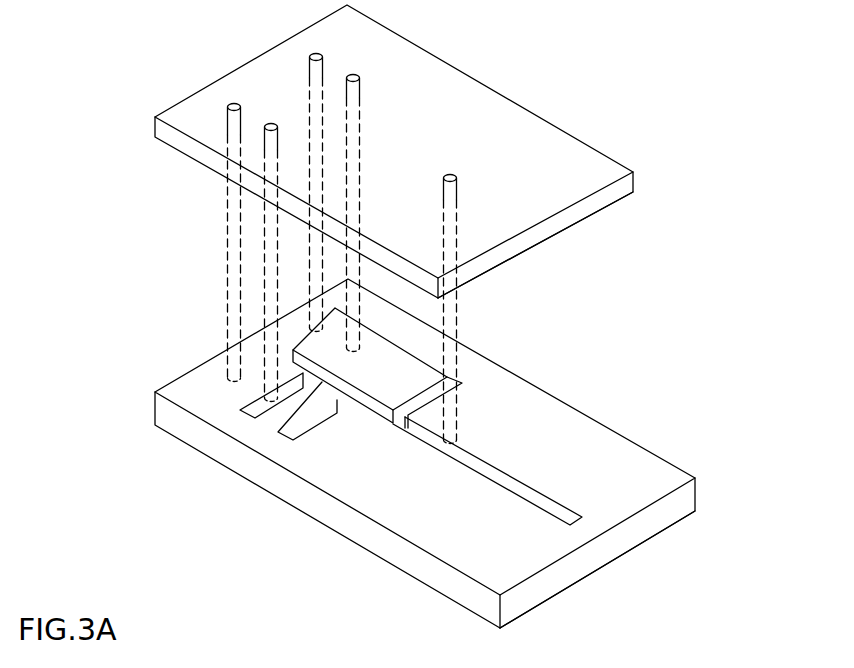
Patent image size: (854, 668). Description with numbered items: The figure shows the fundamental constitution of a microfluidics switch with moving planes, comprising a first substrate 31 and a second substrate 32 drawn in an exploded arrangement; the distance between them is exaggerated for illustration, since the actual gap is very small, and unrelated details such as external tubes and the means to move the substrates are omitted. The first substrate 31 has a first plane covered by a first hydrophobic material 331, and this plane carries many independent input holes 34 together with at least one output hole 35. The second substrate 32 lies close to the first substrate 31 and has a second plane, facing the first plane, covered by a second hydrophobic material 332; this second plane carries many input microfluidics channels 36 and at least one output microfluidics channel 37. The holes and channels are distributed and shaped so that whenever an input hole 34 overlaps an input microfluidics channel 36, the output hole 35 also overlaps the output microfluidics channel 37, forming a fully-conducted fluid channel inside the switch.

The first substrate 31 is at (414, 58).
The first hydrophobic material 331 is at (525, 256).
The second substrate 32 is at (548, 390).
The second hydrophobic material 332 is at (592, 428).
The input holes 34 is at (353, 75).
The output hole 35 is at (450, 175).
The input microfluidics channels 36 is at (353, 348).
The output microfluidics channel 37 is at (552, 509).